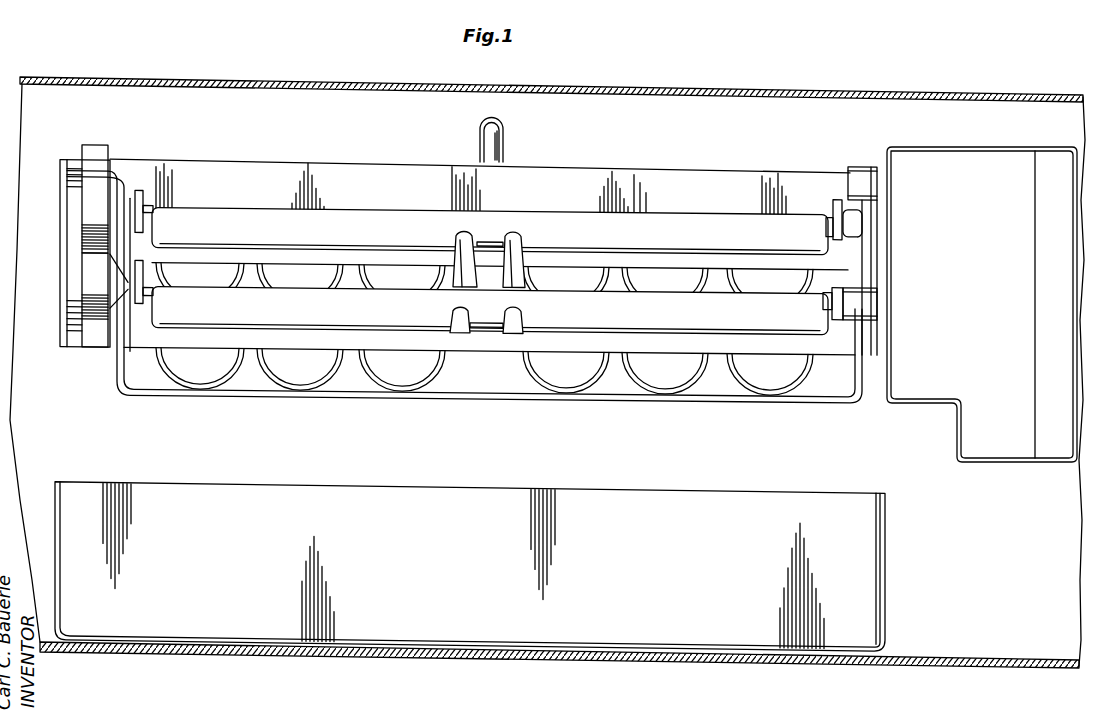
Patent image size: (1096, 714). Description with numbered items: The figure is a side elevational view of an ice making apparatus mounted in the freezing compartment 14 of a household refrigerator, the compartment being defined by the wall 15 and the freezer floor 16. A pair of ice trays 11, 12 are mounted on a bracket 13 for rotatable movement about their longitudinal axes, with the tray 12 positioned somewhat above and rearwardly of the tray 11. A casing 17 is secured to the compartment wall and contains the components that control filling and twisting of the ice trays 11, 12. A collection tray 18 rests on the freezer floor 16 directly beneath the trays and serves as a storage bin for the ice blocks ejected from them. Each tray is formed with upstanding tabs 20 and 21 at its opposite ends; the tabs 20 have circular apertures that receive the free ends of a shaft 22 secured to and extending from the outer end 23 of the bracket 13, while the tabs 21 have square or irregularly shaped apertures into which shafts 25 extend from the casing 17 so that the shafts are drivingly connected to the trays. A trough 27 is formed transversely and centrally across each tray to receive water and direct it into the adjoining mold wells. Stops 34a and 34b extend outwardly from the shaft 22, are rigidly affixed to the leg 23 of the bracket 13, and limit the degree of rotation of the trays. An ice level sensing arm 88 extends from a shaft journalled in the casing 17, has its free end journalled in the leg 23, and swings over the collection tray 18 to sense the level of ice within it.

The ice tray 11 is at (492, 377).
The ice tray 12 is at (580, 243).
The bracket 13 is at (385, 145).
The freezing compartment 14 is at (712, 147).
The wall 15 is at (546, 86).
The freezer floor 16 is at (945, 659).
The casing 17 is at (982, 287).
The collection tray 18 is at (870, 552).
The upstanding tab 20 is at (140, 196).
The upstanding tab 21 is at (838, 200).
The shaft 22 is at (149, 208).
The outer end of the bracket 23 is at (64, 272).
The shaft 25 is at (826, 226).
The trough 27 is at (481, 232).
The stop 34a is at (93, 340).
The stop 34b is at (90, 195).
The ice level sensing arm 88 is at (389, 412).